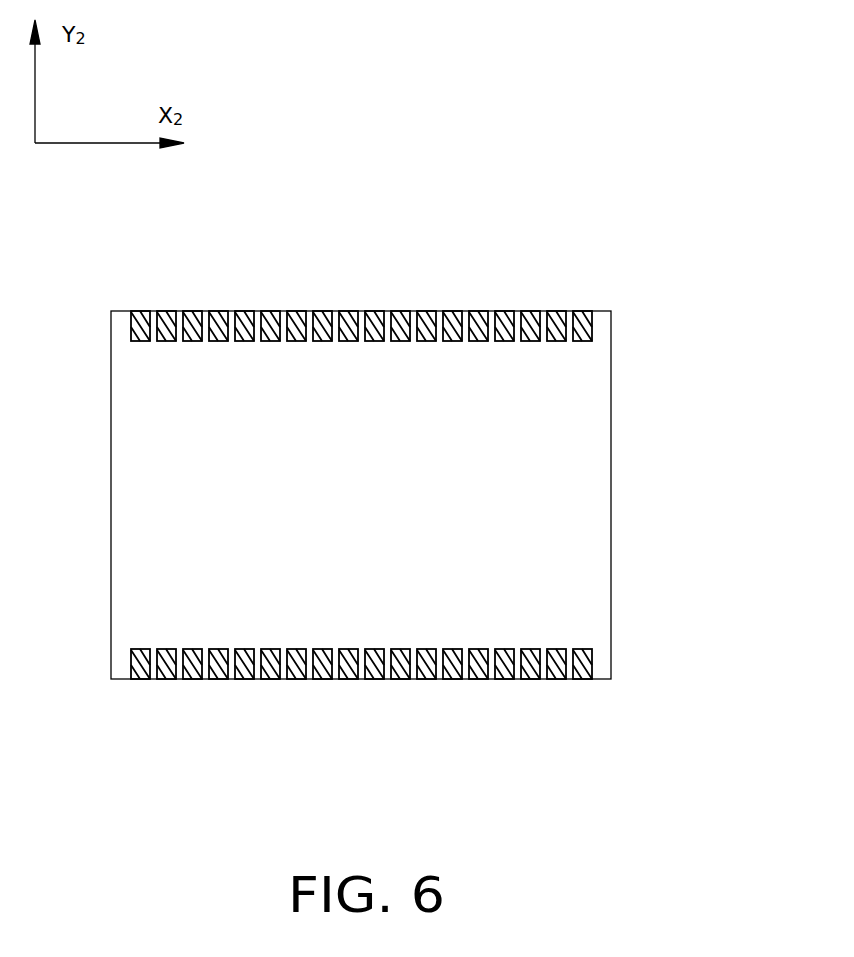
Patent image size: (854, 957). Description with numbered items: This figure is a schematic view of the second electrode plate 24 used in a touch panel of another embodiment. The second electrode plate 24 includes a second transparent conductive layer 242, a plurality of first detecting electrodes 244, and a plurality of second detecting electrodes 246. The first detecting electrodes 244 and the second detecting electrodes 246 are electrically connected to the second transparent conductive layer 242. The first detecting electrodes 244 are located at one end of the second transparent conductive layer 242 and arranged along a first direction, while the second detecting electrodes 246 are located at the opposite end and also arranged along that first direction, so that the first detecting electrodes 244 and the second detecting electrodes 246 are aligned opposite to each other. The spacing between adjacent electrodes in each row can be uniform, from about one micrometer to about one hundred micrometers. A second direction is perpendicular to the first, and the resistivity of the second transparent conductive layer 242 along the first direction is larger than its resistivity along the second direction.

The second electrode plate 24 is at (398, 242).
The second transparent conductive layer 242 is at (528, 463).
The first detecting electrodes 244 is at (592, 333).
The second detecting electrodes 246 is at (578, 660).